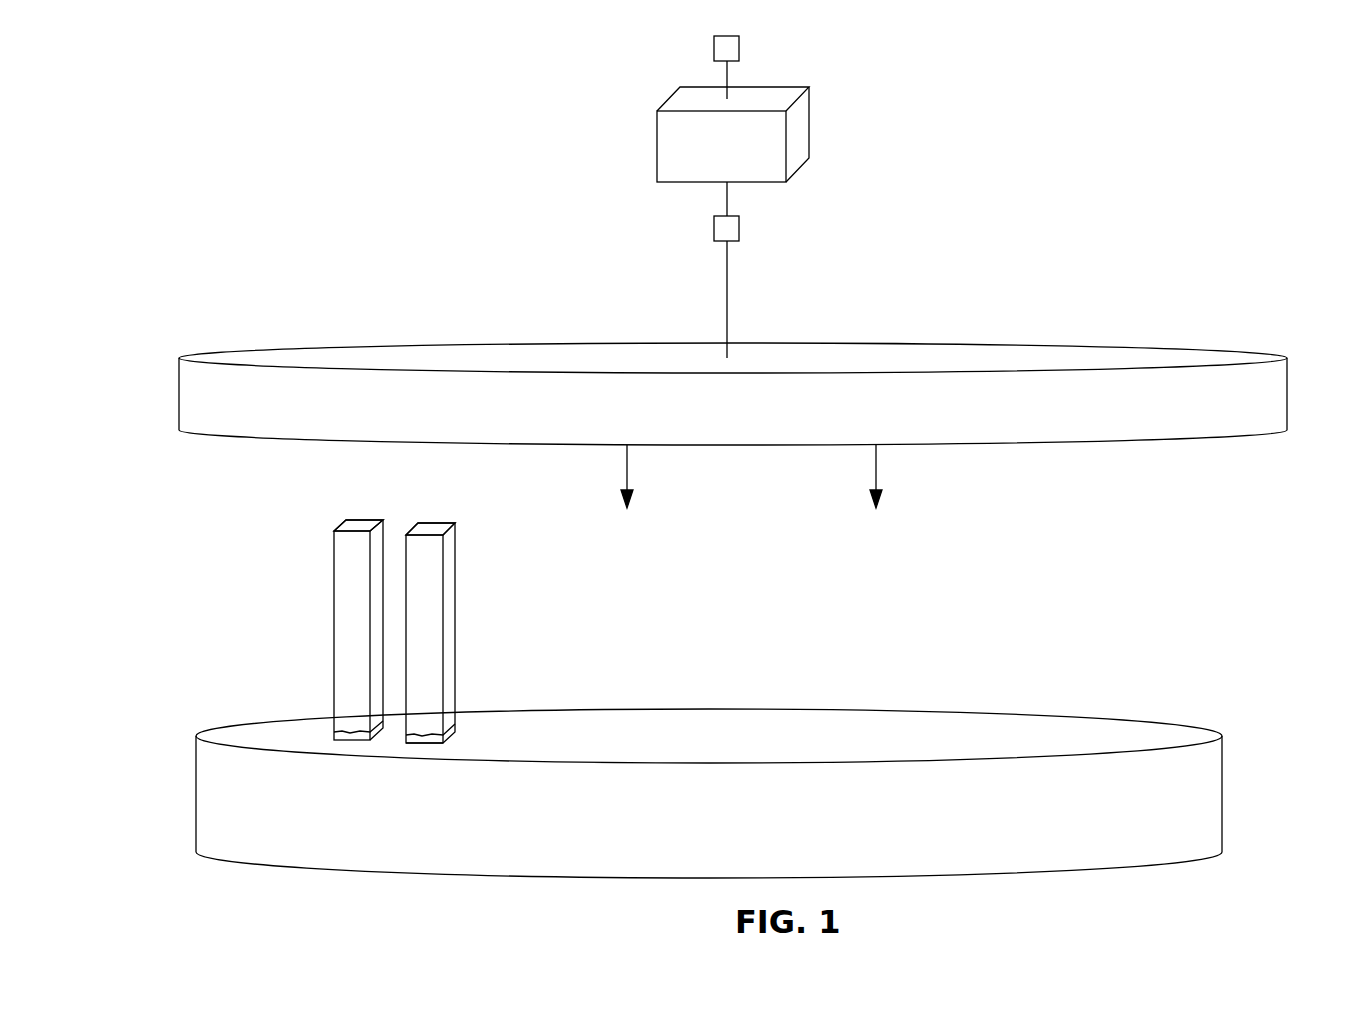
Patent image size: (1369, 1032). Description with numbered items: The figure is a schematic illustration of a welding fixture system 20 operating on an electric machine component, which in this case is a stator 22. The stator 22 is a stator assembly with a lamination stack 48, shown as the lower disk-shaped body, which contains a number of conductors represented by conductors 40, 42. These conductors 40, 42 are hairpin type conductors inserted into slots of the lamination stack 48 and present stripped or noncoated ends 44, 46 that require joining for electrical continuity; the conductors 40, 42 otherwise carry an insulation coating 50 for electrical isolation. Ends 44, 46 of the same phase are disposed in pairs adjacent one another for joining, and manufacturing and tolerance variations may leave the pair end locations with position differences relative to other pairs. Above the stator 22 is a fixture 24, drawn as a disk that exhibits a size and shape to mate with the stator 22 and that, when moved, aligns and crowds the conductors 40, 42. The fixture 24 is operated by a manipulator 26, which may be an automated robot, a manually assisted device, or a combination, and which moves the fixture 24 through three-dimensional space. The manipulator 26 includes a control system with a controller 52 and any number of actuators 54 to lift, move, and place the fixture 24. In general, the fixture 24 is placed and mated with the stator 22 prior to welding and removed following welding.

The welding fixture system 20 is at (945, 93).
The stator 22 is at (1222, 793).
The fixture 24 is at (1287, 393).
The manipulator 26 is at (809, 121).
The conductor 40 is at (340, 648).
The conductor 42 is at (448, 632).
The end 44 is at (358, 527).
The end 46 is at (432, 527).
The lamination stack 48 is at (938, 820).
The insulation coating 50 is at (453, 730).
The controller 52 is at (739, 47).
The actuator 54 is at (739, 229).